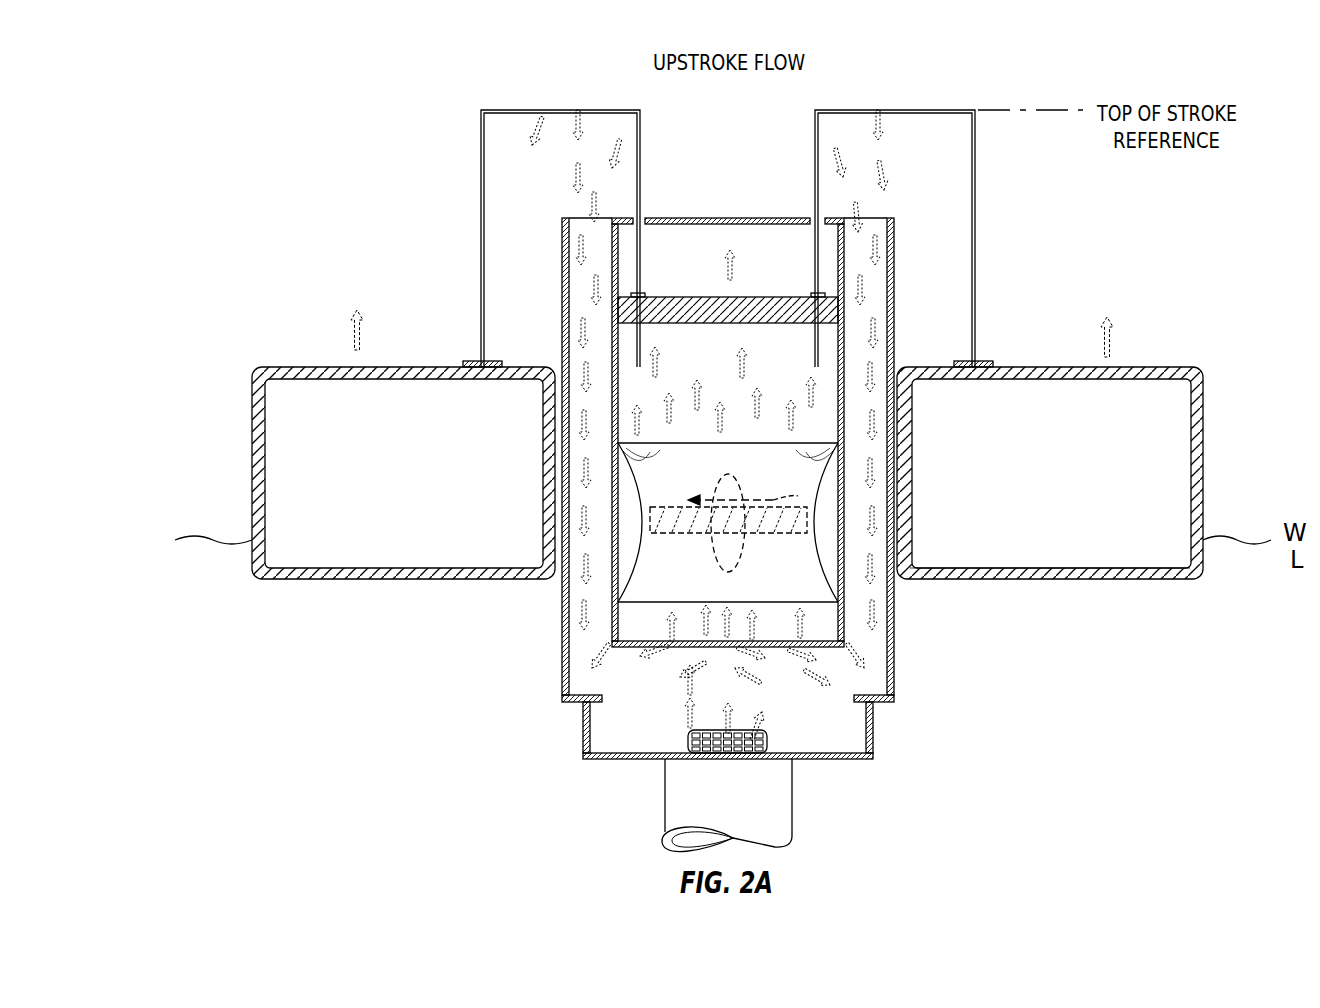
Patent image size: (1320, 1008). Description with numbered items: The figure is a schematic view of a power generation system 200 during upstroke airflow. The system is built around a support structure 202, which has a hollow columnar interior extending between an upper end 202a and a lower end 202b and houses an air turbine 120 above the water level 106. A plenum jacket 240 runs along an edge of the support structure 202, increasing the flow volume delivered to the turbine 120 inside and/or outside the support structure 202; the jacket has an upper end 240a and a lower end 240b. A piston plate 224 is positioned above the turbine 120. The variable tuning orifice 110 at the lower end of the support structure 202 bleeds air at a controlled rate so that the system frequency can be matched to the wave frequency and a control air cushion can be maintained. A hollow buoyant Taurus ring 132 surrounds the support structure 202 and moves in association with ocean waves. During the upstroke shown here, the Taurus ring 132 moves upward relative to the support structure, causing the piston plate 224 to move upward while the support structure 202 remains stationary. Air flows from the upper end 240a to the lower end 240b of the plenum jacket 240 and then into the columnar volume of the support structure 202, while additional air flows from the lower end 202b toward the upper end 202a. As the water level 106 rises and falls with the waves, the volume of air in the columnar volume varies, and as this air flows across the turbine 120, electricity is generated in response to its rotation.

The power generation system 200 is at (232, 127).
The water level 106 is at (1204, 540).
The Taurus ring 132 is at (1085, 581).
The plenum jacket 240 is at (563, 622).
The upper end of plenum jacket 240a is at (560, 226).
The lower end of plenum jacket 240b is at (563, 701).
The support structure 202 is at (874, 739).
The upper end of support structure 202a is at (623, 217).
The lower end of support structure 202b is at (598, 761).
The piston plate 224 is at (740, 325).
The turbine 120 is at (792, 591).
The variable tuning orifice 110 is at (769, 742).